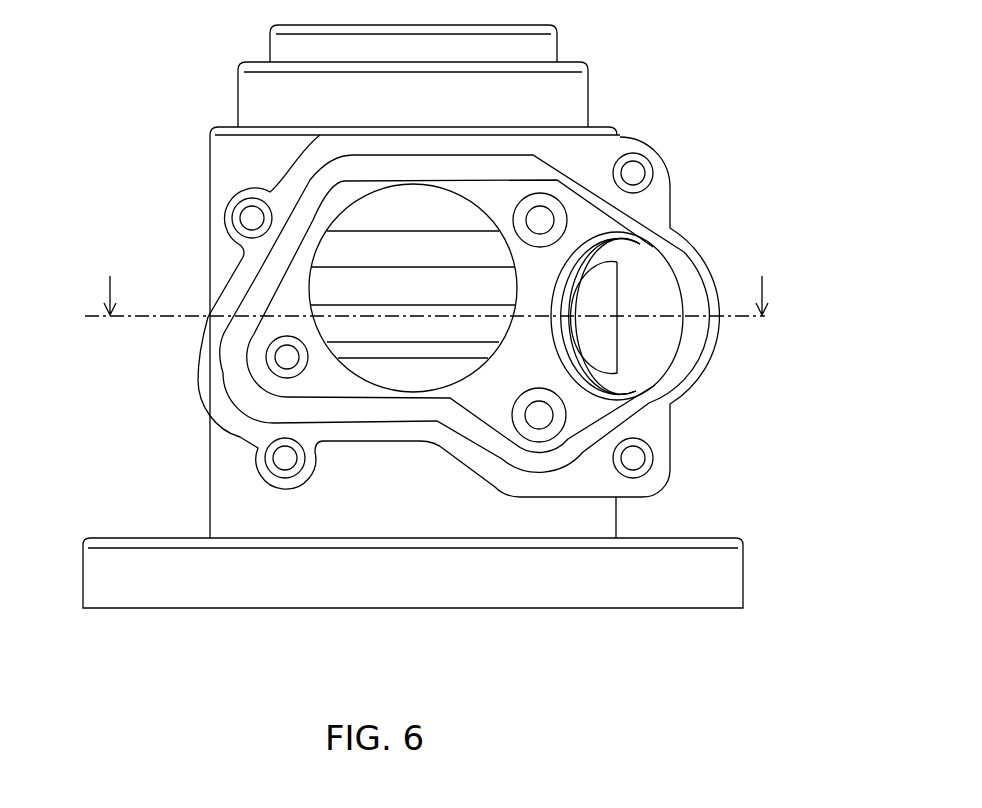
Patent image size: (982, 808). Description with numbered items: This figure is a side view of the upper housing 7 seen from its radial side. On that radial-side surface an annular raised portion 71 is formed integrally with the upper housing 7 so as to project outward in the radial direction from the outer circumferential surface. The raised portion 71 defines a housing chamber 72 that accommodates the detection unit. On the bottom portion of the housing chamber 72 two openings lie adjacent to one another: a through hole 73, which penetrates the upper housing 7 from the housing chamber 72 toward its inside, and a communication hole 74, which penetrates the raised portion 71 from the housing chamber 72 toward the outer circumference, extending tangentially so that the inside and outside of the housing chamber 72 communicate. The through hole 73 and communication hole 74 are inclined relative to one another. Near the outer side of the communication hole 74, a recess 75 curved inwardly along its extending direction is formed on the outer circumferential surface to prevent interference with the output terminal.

The upper housing 7 is at (718, 92).
The raised portion 71 is at (618, 147).
The housing chamber 72 is at (295, 282).
The through hole 73 is at (328, 293).
The communication hole 74 is at (652, 340).
The recess 75 is at (600, 306).